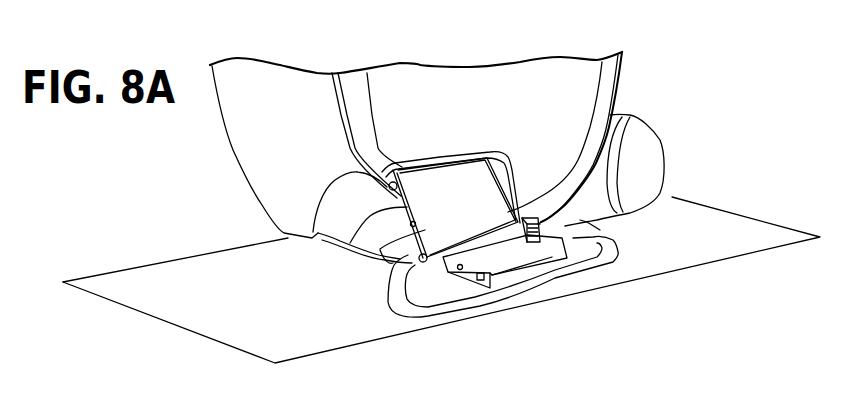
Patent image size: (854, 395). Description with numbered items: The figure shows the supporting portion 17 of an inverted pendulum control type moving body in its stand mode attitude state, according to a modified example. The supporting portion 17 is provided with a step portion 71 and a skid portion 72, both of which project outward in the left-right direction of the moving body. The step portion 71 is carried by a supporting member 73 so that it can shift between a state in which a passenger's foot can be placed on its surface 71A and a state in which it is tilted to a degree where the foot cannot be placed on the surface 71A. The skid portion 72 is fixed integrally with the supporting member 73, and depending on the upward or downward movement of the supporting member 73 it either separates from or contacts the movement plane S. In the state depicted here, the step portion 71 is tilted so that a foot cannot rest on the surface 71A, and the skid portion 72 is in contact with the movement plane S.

The movement plane S is at (140, 298).
The supporting portion 17 is at (643, 233).
The step portion 71 is at (405, 228).
The surface 71A is at (452, 188).
The skid portion 72 is at (470, 295).
The supporting member 73 is at (505, 253).